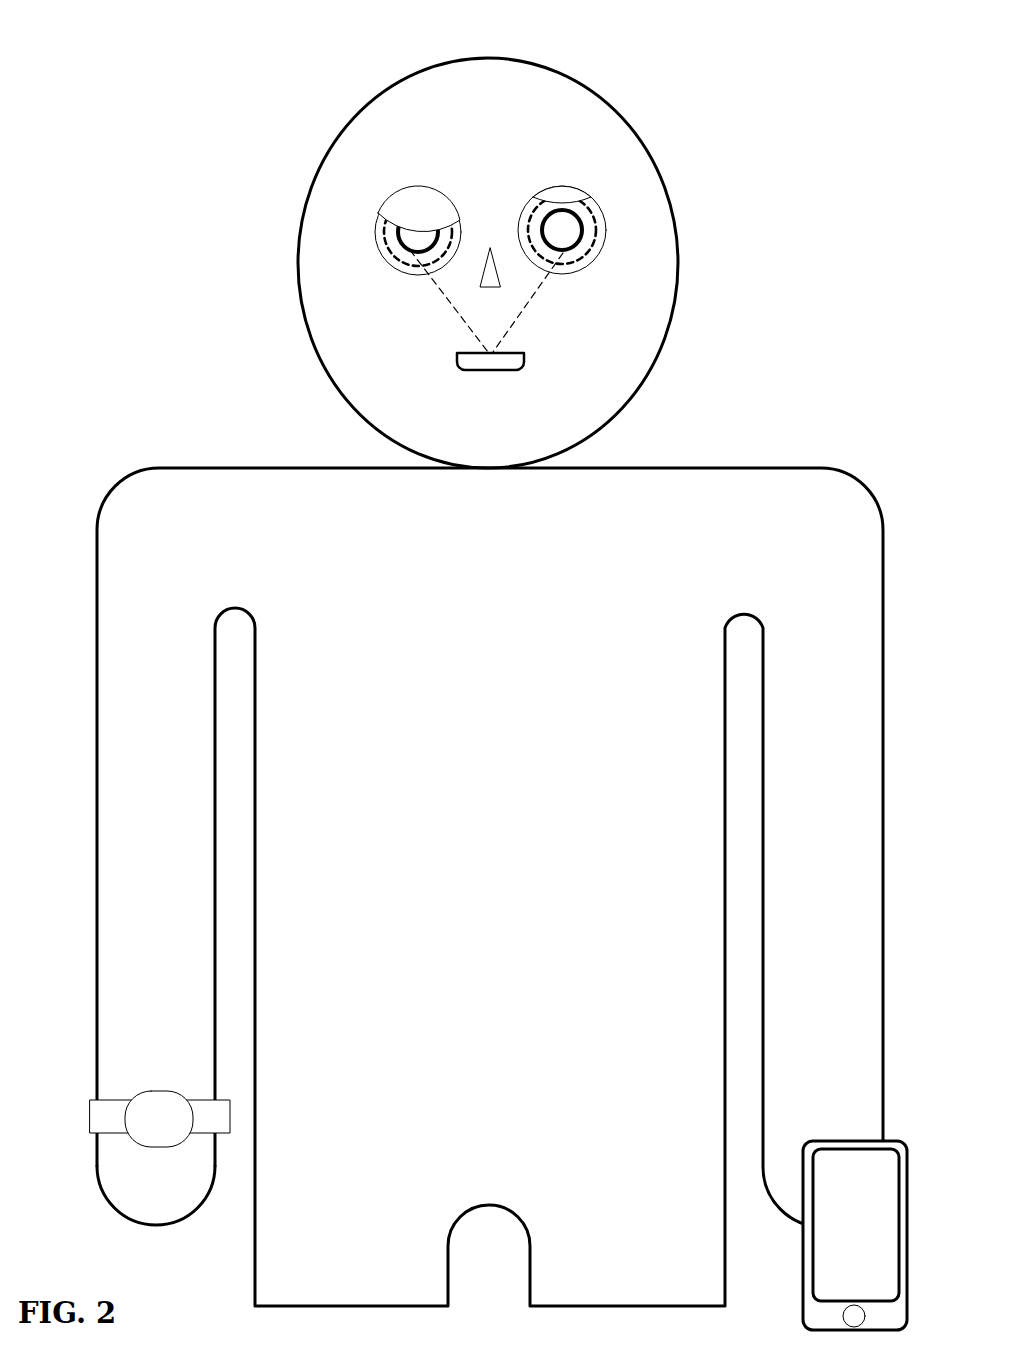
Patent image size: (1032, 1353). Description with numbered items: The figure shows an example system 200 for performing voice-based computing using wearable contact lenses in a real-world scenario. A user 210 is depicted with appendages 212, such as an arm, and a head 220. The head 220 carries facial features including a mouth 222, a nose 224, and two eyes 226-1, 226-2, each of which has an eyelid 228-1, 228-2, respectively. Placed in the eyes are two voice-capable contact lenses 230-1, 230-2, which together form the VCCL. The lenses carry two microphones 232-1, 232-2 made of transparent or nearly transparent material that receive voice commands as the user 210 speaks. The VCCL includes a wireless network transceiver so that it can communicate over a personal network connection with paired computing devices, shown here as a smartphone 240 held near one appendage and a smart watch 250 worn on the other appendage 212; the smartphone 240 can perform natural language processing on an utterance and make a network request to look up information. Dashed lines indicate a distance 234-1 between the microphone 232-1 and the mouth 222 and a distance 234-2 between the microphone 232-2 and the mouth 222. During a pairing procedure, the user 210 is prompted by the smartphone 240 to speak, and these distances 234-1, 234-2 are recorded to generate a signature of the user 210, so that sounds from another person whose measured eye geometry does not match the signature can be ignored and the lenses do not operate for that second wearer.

The system 200 is at (879, 92).
The user 210 is at (508, 689).
The appendages 212 is at (173, 1188).
The head 220 is at (509, 91).
The mouth 222 is at (488, 372).
The nose 224 is at (490, 248).
The eye 226-1 is at (383, 192).
The eye 226-2 is at (570, 189).
The eyelid 228-1 is at (398, 197).
The eyelid 228-2 is at (568, 155).
The voice-capable contact lens 230-1 is at (386, 241).
The voice-capable contact lens 230-2 is at (588, 209).
The microphone 232-1 is at (403, 247).
The microphone 232-2 is at (579, 247).
The distance 234-1 is at (460, 318).
The distance 234-2 is at (616, 339).
The smartphone 240 is at (873, 1224).
The smart watch 250 is at (178, 1131).